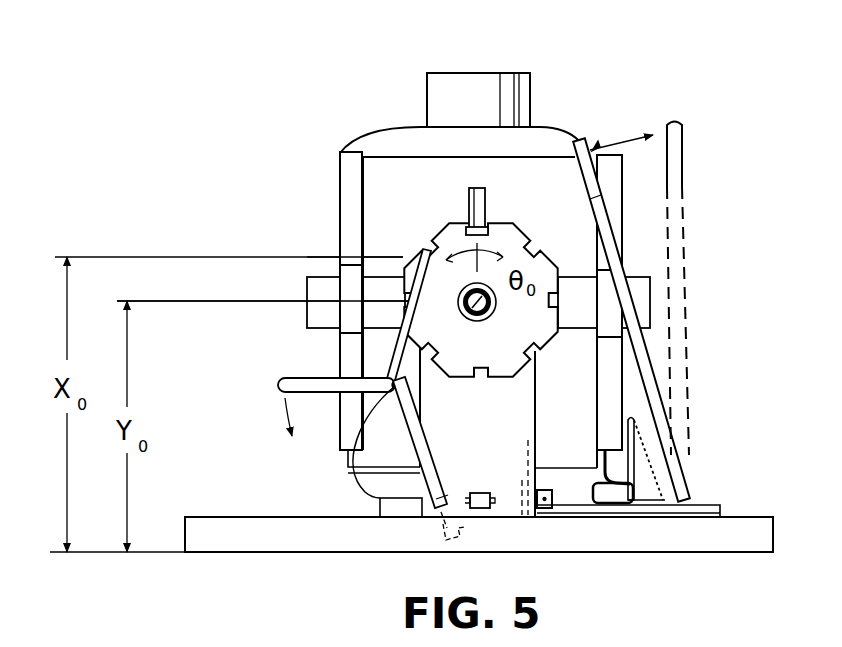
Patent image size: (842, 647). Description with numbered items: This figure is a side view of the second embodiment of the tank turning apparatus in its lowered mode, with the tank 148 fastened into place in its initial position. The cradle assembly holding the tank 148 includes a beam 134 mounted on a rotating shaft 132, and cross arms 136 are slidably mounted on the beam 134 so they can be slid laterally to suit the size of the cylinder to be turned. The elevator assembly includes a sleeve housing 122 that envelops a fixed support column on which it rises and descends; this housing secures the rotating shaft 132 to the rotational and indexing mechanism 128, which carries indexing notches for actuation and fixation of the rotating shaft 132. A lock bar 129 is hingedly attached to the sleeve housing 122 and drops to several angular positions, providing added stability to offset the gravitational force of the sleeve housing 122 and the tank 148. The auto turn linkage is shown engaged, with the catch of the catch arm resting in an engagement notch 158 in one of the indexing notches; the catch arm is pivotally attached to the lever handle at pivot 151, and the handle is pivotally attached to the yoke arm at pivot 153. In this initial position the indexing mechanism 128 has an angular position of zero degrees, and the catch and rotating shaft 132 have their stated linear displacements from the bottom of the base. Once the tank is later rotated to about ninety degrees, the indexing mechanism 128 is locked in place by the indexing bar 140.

The tank 148 is at (395, 143).
The cross arms 136 is at (350, 195).
The beam 134 is at (320, 287).
The indexing bar 140 is at (470, 208).
The engagement notch 158 is at (427, 250).
The rotating shaft 132 is at (470, 316).
The rotational and indexing mechanism 128 is at (500, 347).
The sleeve housing 122 is at (500, 467).
The pivot 151 is at (390, 388).
The pivot 153 is at (352, 478).
The lock bar 129 is at (578, 507).